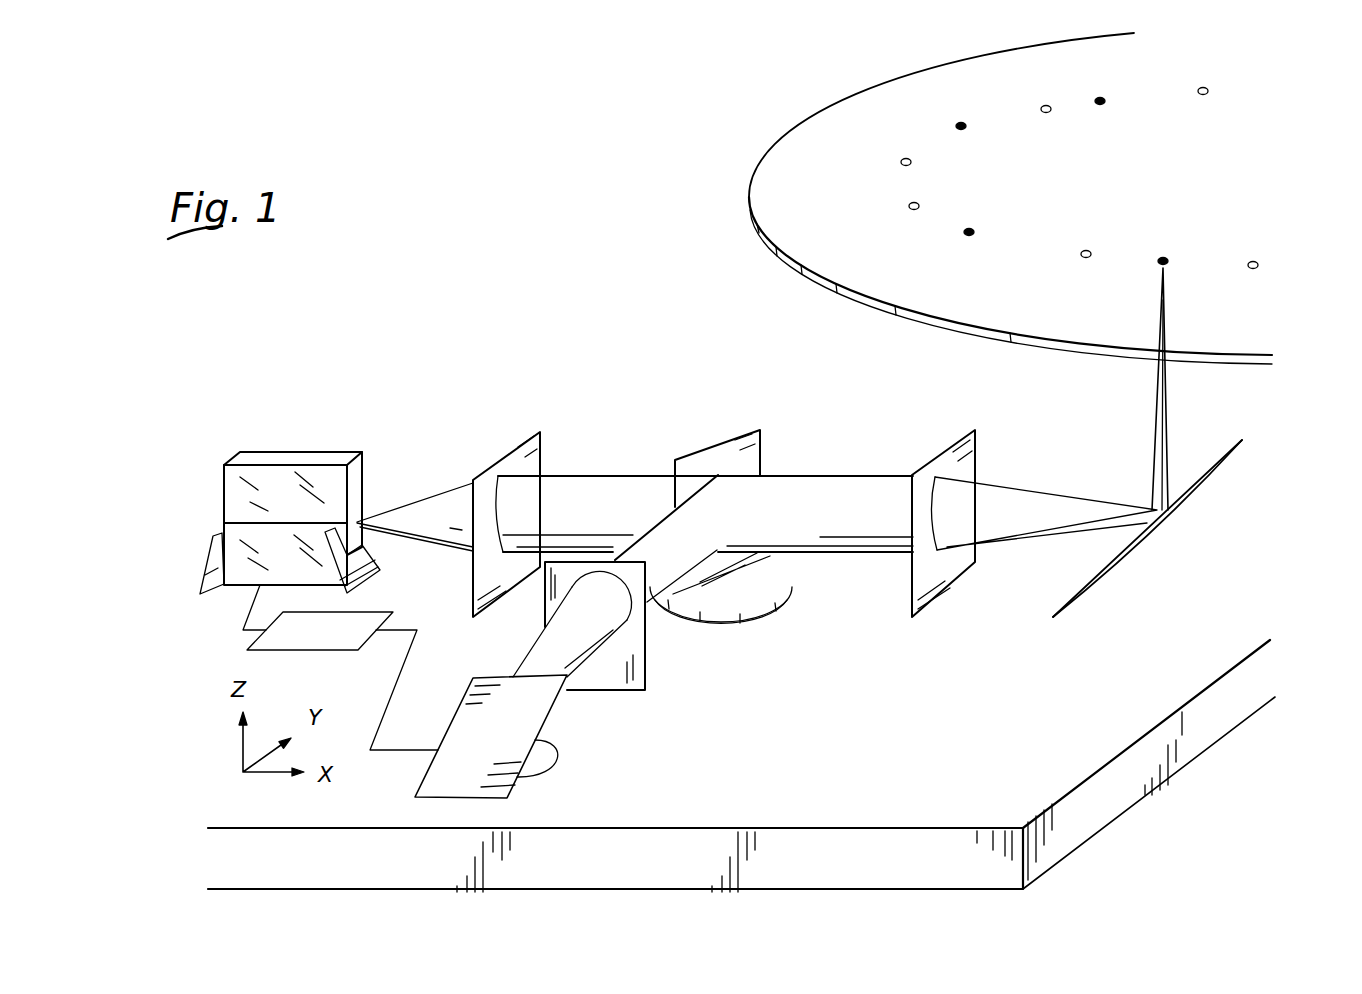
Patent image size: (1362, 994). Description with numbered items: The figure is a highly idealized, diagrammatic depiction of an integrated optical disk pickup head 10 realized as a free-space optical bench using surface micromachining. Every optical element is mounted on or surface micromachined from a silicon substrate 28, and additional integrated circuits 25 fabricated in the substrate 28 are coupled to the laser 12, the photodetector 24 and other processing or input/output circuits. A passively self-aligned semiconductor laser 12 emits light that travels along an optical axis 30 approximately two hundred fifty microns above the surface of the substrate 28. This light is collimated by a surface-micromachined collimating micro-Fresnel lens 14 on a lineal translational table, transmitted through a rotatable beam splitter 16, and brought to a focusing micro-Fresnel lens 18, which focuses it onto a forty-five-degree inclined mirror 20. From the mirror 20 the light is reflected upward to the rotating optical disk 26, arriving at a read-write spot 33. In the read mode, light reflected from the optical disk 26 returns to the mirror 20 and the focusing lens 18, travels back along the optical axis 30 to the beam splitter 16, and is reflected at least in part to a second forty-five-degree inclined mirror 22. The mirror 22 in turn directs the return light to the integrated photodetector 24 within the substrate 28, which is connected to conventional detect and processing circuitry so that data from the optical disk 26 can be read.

The optical pickup head 10 is at (478, 163).
The semiconductor laser 12 is at (224, 490).
The collimating micro-Fresnel lens 14 is at (502, 461).
The beam splitter 16 is at (760, 430).
The focusing micro-Fresnel lens 18 is at (975, 430).
The inclined mirror 20 is at (1207, 477).
The inclined mirror 22 is at (450, 800).
The integrated photodetector 24 is at (558, 758).
The integrated circuits 25 is at (247, 652).
The optical disk 26 is at (807, 119).
The substrate 28 is at (997, 878).
The optical axis 30 is at (640, 476).
The read-write spot 33 is at (1172, 370).